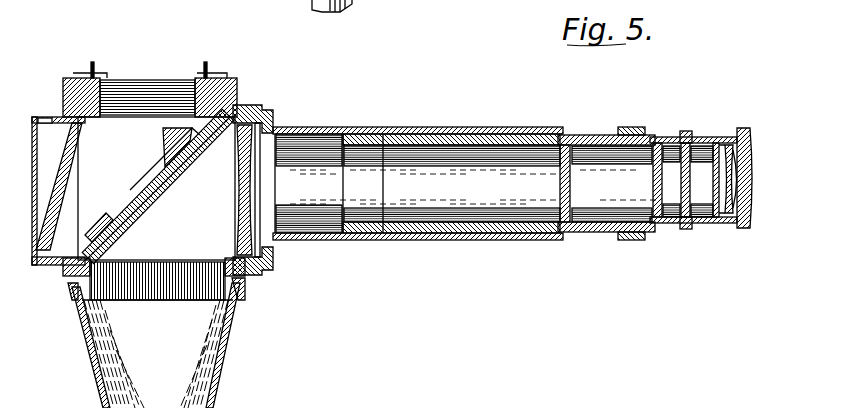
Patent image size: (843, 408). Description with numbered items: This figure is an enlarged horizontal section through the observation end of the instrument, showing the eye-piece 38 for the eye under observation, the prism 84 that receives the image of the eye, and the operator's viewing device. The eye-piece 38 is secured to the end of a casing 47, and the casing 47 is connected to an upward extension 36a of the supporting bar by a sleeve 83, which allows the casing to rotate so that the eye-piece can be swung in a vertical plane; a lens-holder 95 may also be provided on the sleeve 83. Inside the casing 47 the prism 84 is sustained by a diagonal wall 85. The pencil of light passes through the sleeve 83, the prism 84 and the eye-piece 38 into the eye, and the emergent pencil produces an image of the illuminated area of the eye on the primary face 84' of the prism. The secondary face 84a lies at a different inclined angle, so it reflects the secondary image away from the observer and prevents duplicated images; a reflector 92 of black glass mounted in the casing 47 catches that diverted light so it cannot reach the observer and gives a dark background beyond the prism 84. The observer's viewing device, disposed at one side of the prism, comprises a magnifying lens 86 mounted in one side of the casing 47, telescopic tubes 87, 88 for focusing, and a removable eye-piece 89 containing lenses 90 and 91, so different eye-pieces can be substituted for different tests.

The upward extension 36a is at (63, 95).
The sleeve 83 is at (67, 78).
The lens-holder 95 is at (207, 74).
The casing 47 is at (240, 110).
The reflector of black glass 92 is at (78, 157).
The prism 84 is at (157, 186).
The primary face 84' is at (170, 159).
The secondary face 84a is at (168, 152).
The diagonal wall 85 is at (102, 248).
The magnifying lens 86 is at (236, 190).
The telescopic tube 87 is at (357, 128).
The telescopic tube 88 is at (452, 127).
The eye-piece 89 is at (668, 137).
The lens 90 is at (570, 180).
The lens 91 is at (745, 174).
The eye-piece 38 is at (216, 352).